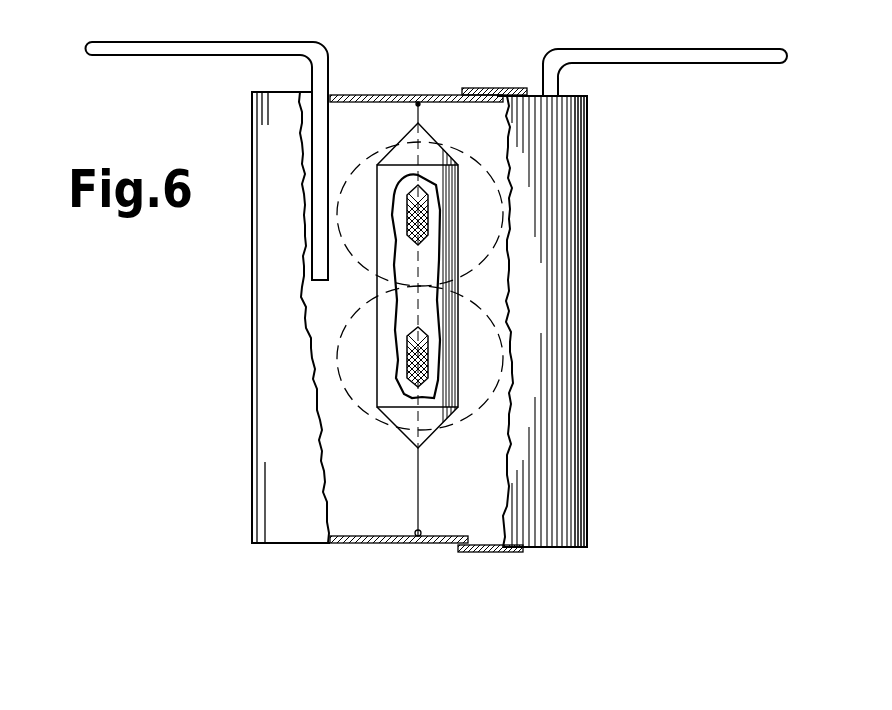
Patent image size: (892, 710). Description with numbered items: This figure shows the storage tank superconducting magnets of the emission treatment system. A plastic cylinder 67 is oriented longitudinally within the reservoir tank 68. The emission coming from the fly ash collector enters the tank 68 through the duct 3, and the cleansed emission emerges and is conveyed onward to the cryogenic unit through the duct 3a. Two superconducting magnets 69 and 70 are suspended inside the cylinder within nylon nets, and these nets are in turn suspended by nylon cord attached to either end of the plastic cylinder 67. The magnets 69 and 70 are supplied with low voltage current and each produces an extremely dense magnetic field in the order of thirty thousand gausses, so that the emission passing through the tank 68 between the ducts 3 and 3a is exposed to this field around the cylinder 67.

The duct 3 is at (153, 55).
The duct 3a is at (682, 63).
The plastic cylinder 67 is at (428, 428).
The reservoir tank 68 is at (587, 262).
The superconducting magnet 69 is at (430, 212).
The superconducting magnet 70 is at (430, 357).